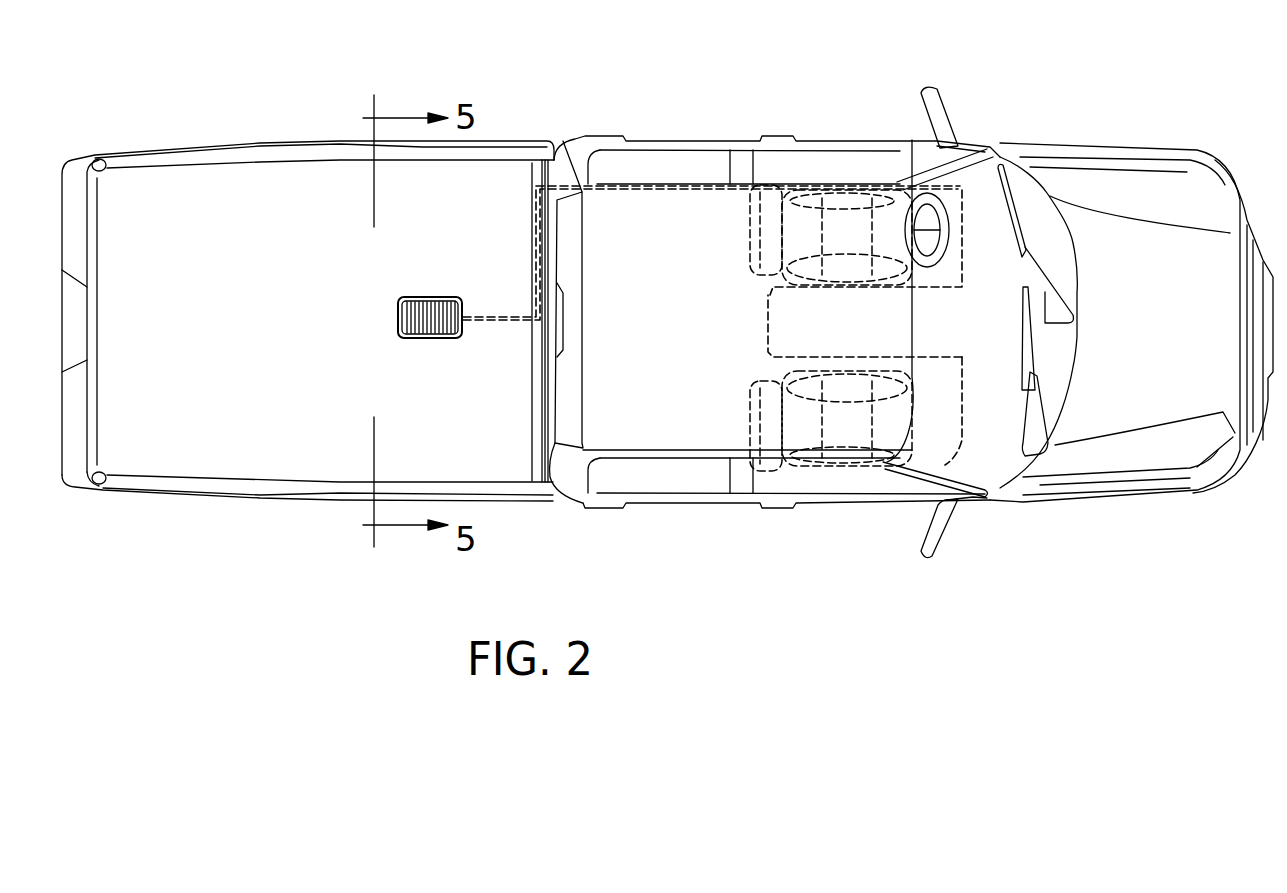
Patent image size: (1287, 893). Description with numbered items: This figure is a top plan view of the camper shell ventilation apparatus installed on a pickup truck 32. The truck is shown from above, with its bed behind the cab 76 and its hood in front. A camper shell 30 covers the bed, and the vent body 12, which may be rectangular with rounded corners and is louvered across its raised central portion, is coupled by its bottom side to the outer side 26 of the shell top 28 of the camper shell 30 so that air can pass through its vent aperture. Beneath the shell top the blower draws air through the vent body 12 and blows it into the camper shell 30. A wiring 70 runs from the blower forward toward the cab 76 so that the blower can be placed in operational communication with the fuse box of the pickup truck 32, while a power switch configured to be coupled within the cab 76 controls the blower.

The vent body 12 is at (432, 320).
The outer side 26 is at (188, 272).
The shell top 28 is at (188, 387).
The camper shell 30 is at (265, 483).
The pickup truck 32 is at (1128, 243).
The wiring 70 is at (499, 318).
The cab 76 is at (862, 333).